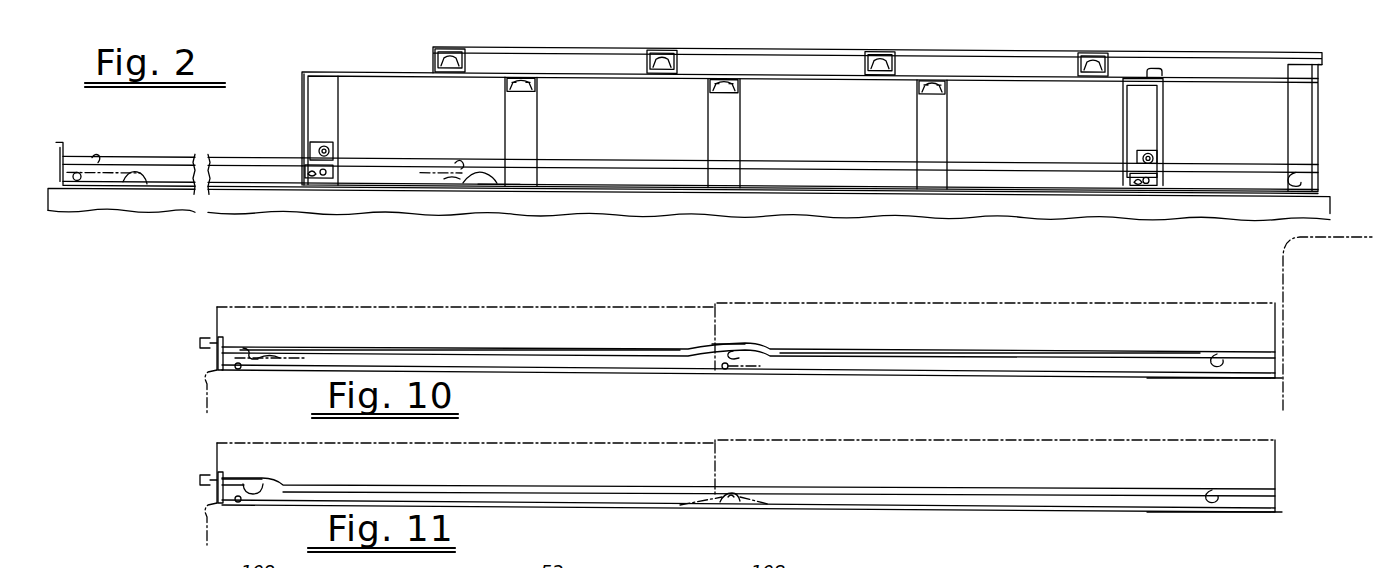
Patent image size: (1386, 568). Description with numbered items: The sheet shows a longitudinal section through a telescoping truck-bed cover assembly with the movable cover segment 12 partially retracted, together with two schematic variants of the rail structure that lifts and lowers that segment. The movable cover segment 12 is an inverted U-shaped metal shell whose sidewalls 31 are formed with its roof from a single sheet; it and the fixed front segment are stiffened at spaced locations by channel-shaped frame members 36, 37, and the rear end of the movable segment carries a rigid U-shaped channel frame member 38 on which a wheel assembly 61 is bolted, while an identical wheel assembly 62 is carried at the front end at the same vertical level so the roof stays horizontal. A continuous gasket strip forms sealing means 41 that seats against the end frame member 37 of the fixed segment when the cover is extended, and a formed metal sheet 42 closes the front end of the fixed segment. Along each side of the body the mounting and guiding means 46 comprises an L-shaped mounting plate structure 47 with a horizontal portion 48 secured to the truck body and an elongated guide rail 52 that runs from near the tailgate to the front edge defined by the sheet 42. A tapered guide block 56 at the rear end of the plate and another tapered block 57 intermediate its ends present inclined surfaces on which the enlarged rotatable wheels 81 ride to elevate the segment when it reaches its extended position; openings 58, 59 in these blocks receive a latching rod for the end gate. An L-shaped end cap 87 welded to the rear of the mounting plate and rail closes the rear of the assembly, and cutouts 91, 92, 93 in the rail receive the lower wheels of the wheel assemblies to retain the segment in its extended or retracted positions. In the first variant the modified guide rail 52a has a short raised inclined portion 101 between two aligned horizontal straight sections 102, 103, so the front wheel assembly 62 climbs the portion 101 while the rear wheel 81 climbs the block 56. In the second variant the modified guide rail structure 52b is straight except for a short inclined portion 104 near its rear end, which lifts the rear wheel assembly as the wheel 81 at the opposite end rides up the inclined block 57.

In FIG. 2, the movable cover segment 12 is at (393, 64).
In FIG. 2, the sidewalls 31 is at (410, 116).
In FIG. 2, the channel-shaped frame members 36 is at (527, 132).
In FIG. 2, the channel-shaped frame members 37 is at (458, 64).
In FIG. 2, the channel frame member 38 is at (328, 101).
In FIG. 2, the sealing means 41 is at (1157, 61).
In FIG. 2, the sheet 42 is at (1308, 104).
In FIG. 2, the mounting and guiding means 46 is at (280, 154).
In FIG. 10, the mounting plate structure 47 is at (498, 358).
In FIG. 2, the horizontal portion 48 is at (297, 186).
In FIG. 2, the guide rail 52 is at (383, 157).
In FIG. 10, the modified guide rail 52a is at (530, 341).
In FIG. 11, the modified guide rail structure 52b is at (528, 477).
In FIG. 2, the tapered guide block 56 is at (143, 188).
In FIG. 10, the tapered guide block 56 is at (302, 358).
In FIG. 2, the tapered block 57 is at (493, 181).
In FIG. 11, the tapered block 57 is at (781, 504).
In FIG. 2, the opening 58 is at (75, 180).
In FIG. 10, the opening 58 is at (238, 369).
In FIG. 11, the opening 58 is at (238, 506).
In FIG. 2, the opening 59 is at (453, 181).
In FIG. 10, the opening 59 is at (744, 369).
In FIG. 11, the opening 59 is at (737, 506).
In FIG. 2, the wheel assembly 61 is at (325, 137).
In FIG. 2, the wheel assembly 62 is at (1135, 143).
In FIG. 2, the rotatable wheels 81 is at (321, 184).
In FIG. 2, the end cap 87 is at (60, 140).
In FIG. 2, the cutout 91 is at (100, 170).
In FIG. 10, the cutout 91 is at (246, 356).
In FIG. 11, the cutout 91 is at (253, 484).
In FIG. 2, the cutout 92 is at (464, 159).
In FIG. 10, the cutout 92 is at (745, 352).
In FIG. 11, the cutout 92 is at (742, 494).
In FIG. 2, the cutout 93 is at (1283, 170).
In FIG. 10, the cutout 93 is at (1217, 354).
In FIG. 11, the cutout 93 is at (1212, 490).
In FIG. 10, the raised inclined portion 101 is at (739, 342).
In FIG. 10, the horizontal straight section 102 is at (594, 350).
In FIG. 10, the horizontal straight section 103 is at (994, 351).
In FIG. 11, the inclined portion 104 is at (236, 476).